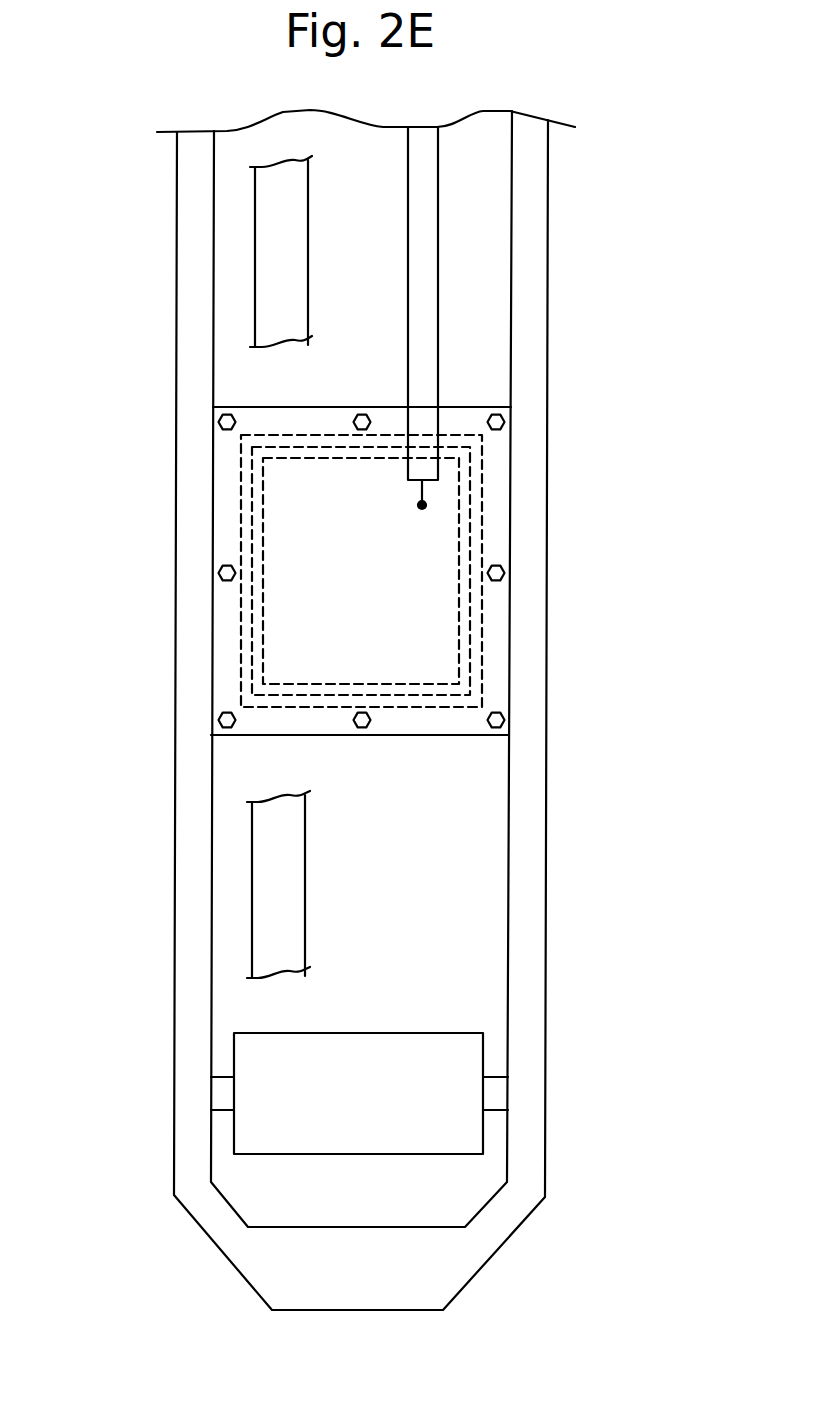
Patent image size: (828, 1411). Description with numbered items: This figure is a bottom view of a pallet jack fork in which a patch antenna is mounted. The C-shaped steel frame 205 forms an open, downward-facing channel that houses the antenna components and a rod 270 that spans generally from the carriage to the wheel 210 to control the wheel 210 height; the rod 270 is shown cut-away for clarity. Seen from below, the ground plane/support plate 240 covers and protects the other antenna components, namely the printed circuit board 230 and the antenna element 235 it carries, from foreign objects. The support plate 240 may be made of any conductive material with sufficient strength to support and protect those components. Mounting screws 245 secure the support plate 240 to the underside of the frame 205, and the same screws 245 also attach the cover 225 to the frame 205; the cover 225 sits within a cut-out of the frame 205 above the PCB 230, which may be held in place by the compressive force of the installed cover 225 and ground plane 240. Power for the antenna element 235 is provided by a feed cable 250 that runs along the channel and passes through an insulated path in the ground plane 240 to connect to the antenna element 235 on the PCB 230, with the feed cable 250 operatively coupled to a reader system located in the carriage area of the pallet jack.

The steel frame 205 is at (560, 256).
The wheel 210 is at (405, 1042).
The cover 225 is at (228, 468).
The printed circuit board 230 is at (240, 505).
The antenna element 235 is at (252, 543).
The ground plane/support plate 240 is at (444, 751).
The screws 245 is at (365, 727).
The feed cable 250 is at (407, 255).
The rod 270 is at (308, 195).